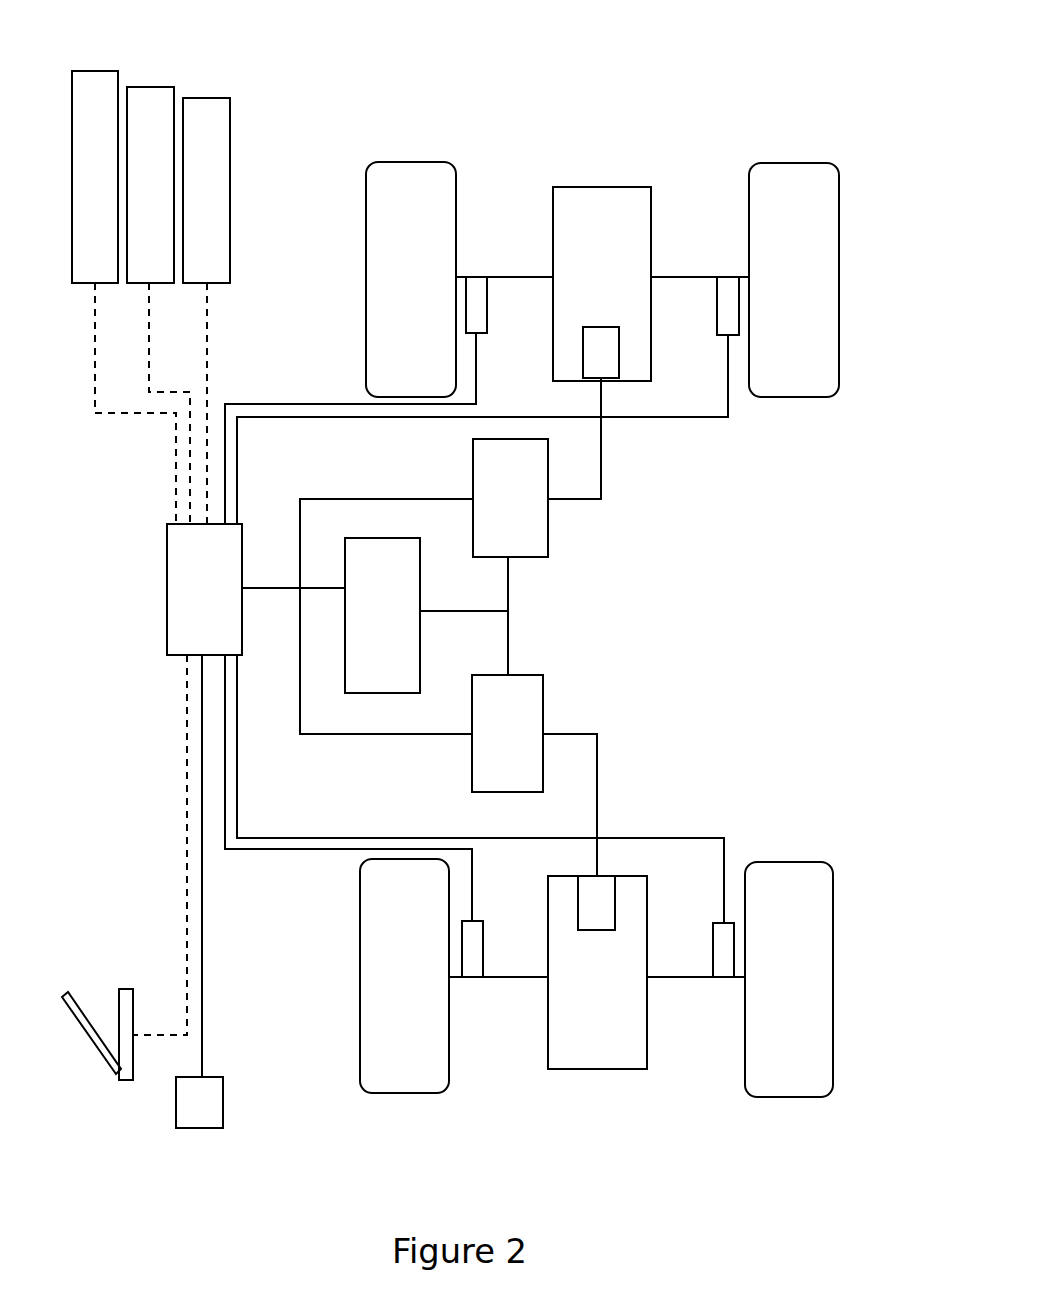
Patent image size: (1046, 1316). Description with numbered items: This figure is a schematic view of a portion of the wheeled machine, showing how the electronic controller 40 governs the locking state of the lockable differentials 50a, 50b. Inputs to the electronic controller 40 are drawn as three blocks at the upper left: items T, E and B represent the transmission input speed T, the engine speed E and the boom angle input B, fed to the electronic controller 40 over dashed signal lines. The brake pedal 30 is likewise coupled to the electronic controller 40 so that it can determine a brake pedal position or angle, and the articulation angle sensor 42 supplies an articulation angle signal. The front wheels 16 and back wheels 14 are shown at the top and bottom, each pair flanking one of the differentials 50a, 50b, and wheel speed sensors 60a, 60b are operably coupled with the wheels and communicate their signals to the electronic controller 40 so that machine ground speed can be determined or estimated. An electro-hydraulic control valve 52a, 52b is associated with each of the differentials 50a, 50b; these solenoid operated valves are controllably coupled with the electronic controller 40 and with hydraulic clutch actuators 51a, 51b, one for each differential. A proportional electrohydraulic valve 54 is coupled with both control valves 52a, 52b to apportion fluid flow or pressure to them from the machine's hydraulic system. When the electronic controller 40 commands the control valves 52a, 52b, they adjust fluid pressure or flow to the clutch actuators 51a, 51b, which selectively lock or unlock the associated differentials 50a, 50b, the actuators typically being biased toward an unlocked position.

The transmission input speed T is at (100, 78).
The engine speed E is at (155, 94).
The boom angle input B is at (212, 106).
The back wheels 14 is at (372, 938).
The front wheels 16 is at (374, 368).
The brake pedal 30 is at (84, 1032).
The electronic controller 40 is at (172, 622).
The articulation angle sensor 42 is at (220, 1094).
The lockable differential 50a is at (636, 195).
The lockable differential 50b is at (630, 1054).
The hydraulic clutch actuator 51a is at (605, 372).
The hydraulic clutch actuator 51b is at (600, 886).
The electro-hydraulic control valve 52a is at (540, 520).
The electro-hydraulic control valve 52b is at (531, 716).
The proportional electrohydraulic valve 54 is at (410, 583).
The wheel speed sensor 60a is at (476, 290).
The wheel speed sensor 60b is at (473, 968).